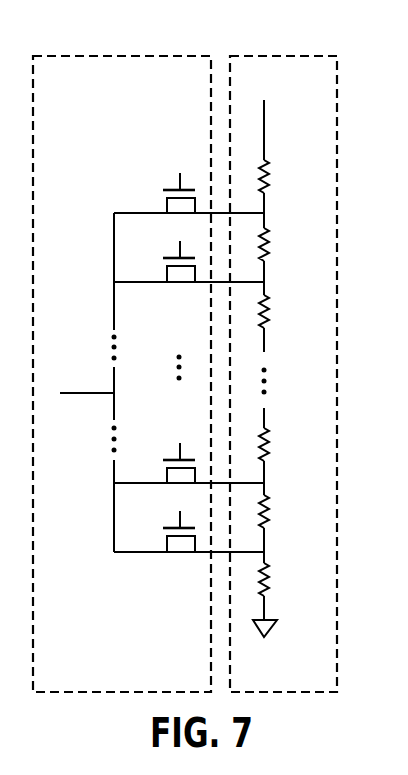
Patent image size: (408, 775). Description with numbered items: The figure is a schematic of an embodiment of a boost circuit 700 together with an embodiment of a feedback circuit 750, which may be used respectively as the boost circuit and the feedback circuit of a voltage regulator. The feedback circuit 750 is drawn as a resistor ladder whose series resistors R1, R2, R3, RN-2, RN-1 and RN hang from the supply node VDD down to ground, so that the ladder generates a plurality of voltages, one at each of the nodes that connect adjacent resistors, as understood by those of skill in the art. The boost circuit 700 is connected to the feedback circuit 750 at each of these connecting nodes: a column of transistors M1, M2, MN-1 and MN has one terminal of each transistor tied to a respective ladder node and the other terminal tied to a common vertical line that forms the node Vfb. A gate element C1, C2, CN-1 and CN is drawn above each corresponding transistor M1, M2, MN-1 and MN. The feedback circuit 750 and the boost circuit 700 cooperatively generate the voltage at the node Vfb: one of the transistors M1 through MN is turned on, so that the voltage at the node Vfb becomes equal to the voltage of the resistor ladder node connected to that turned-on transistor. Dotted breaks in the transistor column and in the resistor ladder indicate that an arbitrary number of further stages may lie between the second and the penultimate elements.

The boost circuit 700 is at (148, 353).
The feedback circuit 750 is at (290, 353).
The transistor M1 is at (168, 210).
The transistor M2 is at (168, 278).
The transistor MN-1 is at (165, 480).
The transistor MN is at (167, 547).
The first capacitor C1 is at (179, 167).
The second capacitor C2 is at (179, 236).
The (N-1)th capacitor CN-1 is at (187, 437).
The Nth capacitor CN is at (179, 506).
The resistor R1 is at (280, 176).
The resistor R2 is at (280, 244).
The resistor R3 is at (280, 311).
The resistor RN-2 is at (291, 444).
The resistor RN-1 is at (291, 511).
The resistor RN is at (282, 579).
The node Vfb is at (83, 378).
The supply voltage node VDD is at (268, 118).